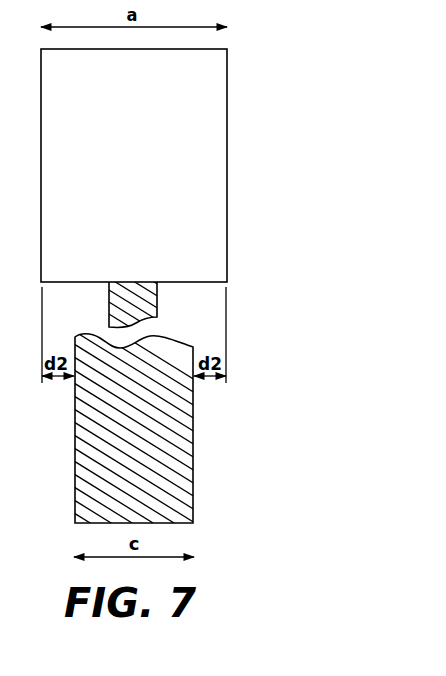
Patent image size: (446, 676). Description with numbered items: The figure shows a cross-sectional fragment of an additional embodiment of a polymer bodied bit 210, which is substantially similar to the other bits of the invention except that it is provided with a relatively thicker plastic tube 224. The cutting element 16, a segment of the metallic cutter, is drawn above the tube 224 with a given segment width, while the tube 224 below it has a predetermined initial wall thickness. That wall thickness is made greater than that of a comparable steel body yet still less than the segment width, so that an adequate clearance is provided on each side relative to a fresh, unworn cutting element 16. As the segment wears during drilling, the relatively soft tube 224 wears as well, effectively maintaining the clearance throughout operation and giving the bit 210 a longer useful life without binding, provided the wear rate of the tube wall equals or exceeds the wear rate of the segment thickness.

The cutting element 16 is at (146, 172).
The polymer bodied bit 210 is at (262, 220).
The plastic tube 224 is at (183, 462).